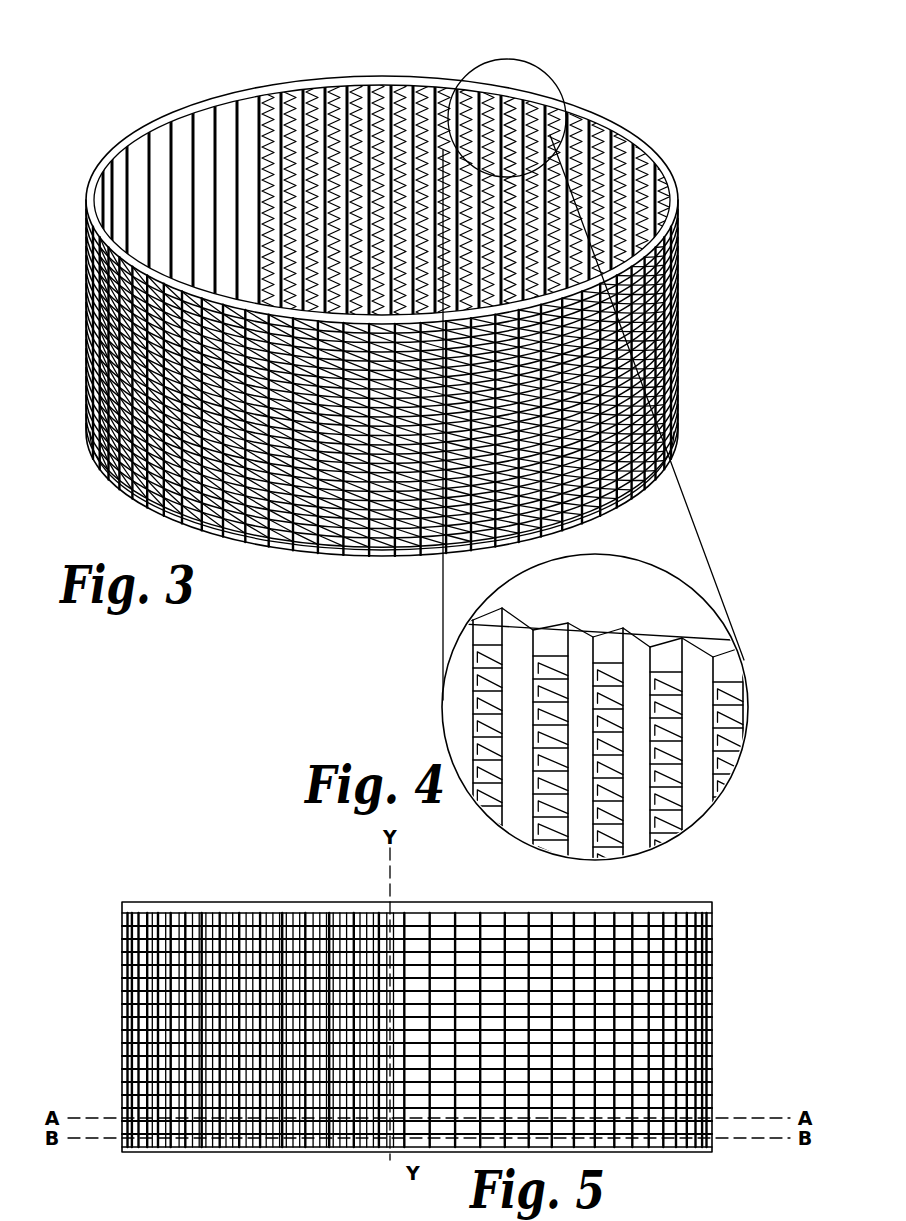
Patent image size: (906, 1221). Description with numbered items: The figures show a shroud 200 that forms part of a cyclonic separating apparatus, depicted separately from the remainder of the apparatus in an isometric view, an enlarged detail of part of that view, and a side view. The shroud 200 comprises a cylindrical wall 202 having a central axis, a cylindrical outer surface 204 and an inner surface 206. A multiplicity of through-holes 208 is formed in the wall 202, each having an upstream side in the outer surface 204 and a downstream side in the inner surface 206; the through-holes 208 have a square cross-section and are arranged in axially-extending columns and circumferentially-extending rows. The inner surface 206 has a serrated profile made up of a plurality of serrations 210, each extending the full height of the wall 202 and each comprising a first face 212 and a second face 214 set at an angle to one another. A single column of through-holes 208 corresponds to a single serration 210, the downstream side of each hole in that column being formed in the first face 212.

In FIG. 3, the shroud 200 is at (275, 572).
In FIG. 4, the shroud 200 is at (742, 613).
In FIG. 5, the shroud 200 is at (138, 864).
In FIG. 4, the cylindrical wall 202 is at (632, 627).
In FIG. 5, the cylindrical wall 202 is at (323, 912).
In FIG. 3, the cylindrical outer surface 204 is at (93, 242).
In FIG. 5, the cylindrical outer surface 204 is at (222, 912).
In FIG. 3, the inner surface 206 is at (168, 148).
In FIG. 3, the through-holes 208 is at (512, 112).
In FIG. 4, the through-holes 208 is at (543, 728).
In FIG. 3, the serrations 210 is at (272, 98).
In FIG. 4, the serrations 210 is at (592, 630).
In FIG. 4, the first face 212 is at (548, 640).
In FIG. 4, the second face 214 is at (510, 797).